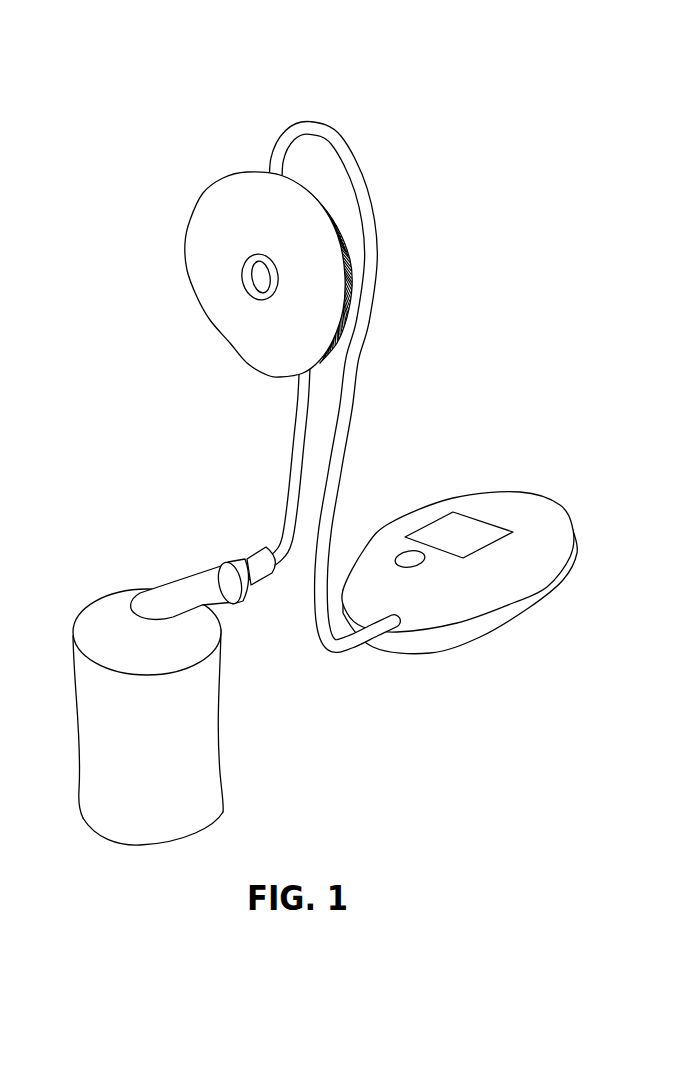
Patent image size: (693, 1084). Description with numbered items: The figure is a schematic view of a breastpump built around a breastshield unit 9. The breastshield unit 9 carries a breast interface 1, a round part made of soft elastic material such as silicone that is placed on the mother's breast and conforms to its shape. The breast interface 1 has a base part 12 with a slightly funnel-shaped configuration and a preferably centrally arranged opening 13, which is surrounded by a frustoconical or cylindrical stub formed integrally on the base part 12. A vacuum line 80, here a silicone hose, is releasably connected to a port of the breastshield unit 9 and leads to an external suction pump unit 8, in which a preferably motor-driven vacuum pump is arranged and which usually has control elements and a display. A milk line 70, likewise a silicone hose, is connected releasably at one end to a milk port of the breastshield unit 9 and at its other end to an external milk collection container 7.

The breast interface 1 is at (218, 248).
The milk collection container 7 is at (200, 778).
The suction pump unit 8 is at (473, 628).
The breastshield unit 9 is at (250, 152).
The base part 12 is at (233, 308).
The opening 13 is at (259, 270).
The milk line 70 is at (292, 485).
The vacuum line 80 is at (361, 361).